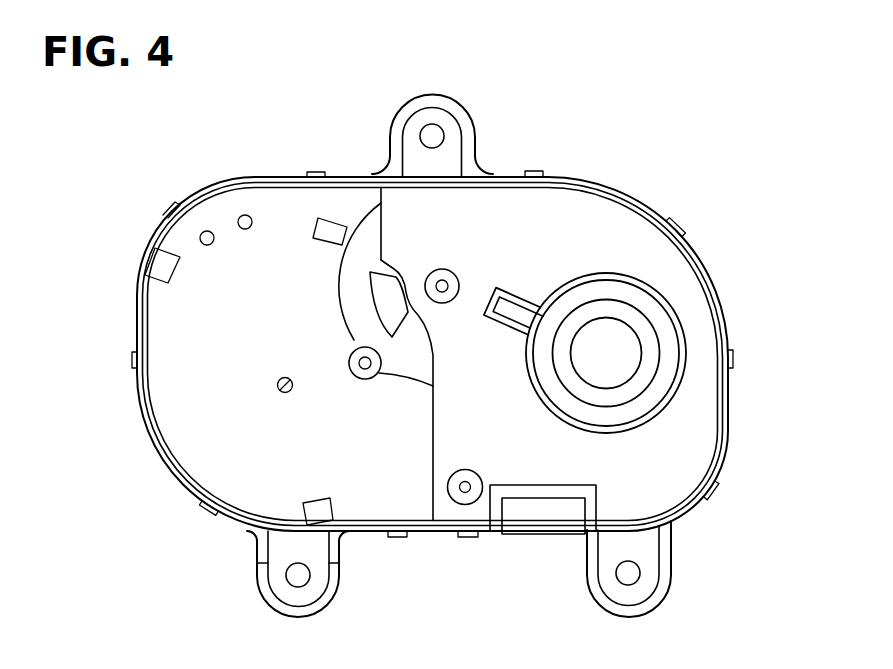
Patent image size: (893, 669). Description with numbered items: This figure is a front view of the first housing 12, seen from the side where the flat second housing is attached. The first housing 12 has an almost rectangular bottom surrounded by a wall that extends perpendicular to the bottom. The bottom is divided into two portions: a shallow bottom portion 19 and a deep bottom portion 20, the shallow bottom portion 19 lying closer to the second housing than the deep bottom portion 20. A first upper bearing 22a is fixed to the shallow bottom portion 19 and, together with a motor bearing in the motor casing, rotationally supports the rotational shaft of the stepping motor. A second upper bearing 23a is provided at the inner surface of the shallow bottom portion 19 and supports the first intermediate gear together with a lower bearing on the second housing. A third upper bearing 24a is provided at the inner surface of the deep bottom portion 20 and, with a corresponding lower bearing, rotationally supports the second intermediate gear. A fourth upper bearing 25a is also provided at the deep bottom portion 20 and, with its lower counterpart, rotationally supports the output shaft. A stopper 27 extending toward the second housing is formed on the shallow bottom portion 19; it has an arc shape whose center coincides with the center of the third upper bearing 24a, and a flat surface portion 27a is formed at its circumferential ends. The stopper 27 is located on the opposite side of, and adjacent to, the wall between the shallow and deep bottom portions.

The first housing 12 is at (634, 196).
The shallow bottom portion 19 is at (200, 466).
The deep bottom portion 20 is at (495, 227).
The first upper bearing 22a is at (284, 378).
The second upper bearing 23a is at (366, 368).
The third upper bearing 24a is at (458, 278).
The fourth upper bearing 25a is at (629, 381).
The stopper 27 is at (371, 297).
The flat surface portion 27a is at (387, 268).